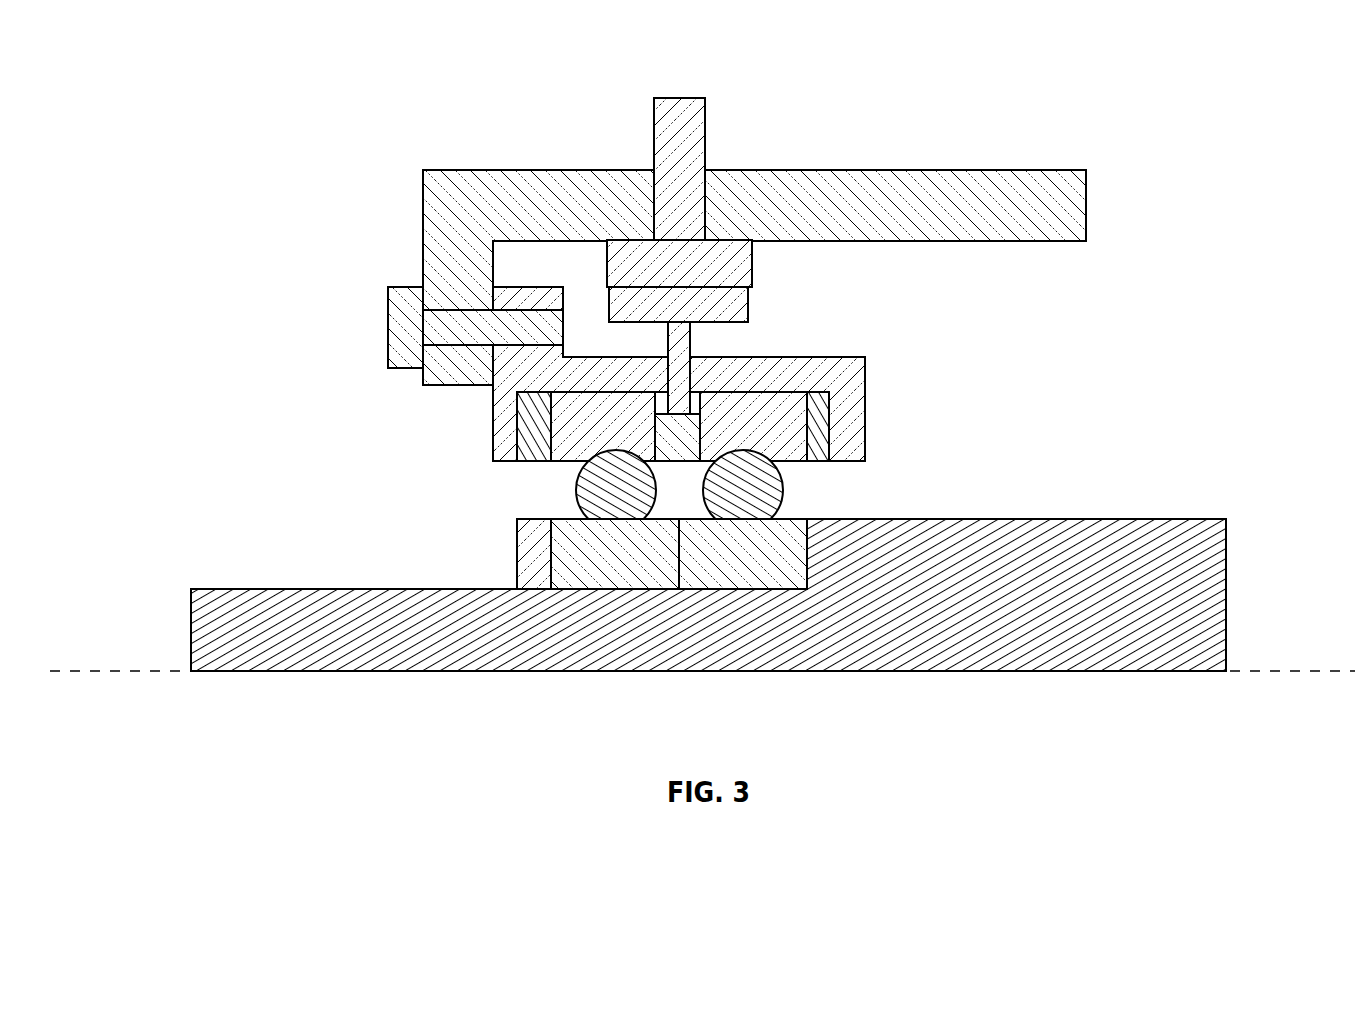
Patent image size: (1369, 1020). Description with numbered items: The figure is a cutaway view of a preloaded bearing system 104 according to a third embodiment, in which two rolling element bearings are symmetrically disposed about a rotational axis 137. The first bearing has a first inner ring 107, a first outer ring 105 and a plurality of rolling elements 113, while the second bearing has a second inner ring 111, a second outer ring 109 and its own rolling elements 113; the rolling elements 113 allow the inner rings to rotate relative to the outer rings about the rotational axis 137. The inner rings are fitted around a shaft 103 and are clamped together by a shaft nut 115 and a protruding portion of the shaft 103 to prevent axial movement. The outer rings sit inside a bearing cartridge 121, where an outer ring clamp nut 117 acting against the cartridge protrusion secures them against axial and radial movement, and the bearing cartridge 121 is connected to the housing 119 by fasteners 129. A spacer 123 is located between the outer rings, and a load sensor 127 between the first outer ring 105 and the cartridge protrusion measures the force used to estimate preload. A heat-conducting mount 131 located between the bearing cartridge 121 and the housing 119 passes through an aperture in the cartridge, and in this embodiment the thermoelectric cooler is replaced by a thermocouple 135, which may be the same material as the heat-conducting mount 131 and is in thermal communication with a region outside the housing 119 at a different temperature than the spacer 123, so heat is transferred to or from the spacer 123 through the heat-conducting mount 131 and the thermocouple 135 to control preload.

The preloaded bearing system 104 is at (700, 374).
The shaft 103 is at (1128, 535).
The first outer ring 105 is at (797, 405).
The first inner ring 107 is at (800, 532).
The second outer ring 109 is at (568, 448).
The second inner ring 111 is at (570, 547).
The rolling elements 113 is at (590, 495).
The shaft nut 115 is at (530, 573).
The outer ring clamp nut 117 is at (527, 418).
The housing 119 is at (1070, 218).
The bearing cartridge 121 is at (855, 370).
The spacer 123 is at (662, 410).
The load sensor 127 is at (818, 417).
The fasteners 129 is at (388, 355).
The heat-conducting mount 131 is at (750, 302).
The thermocouple 135 is at (690, 215).
The rotational axis 137 is at (112, 671).